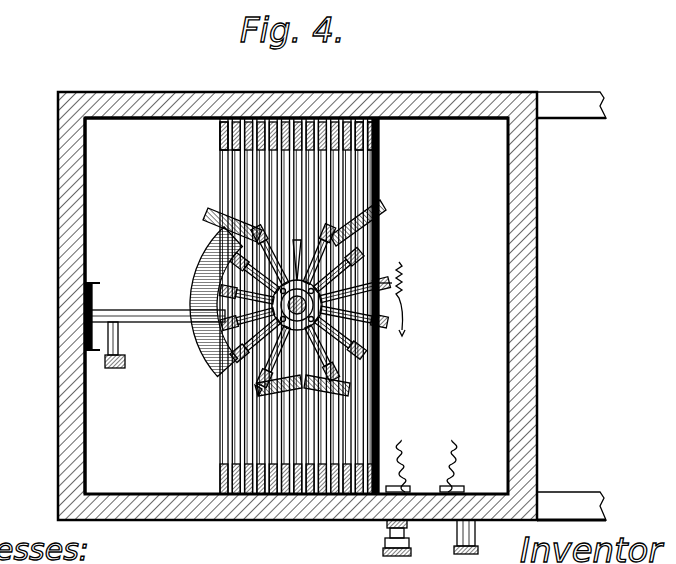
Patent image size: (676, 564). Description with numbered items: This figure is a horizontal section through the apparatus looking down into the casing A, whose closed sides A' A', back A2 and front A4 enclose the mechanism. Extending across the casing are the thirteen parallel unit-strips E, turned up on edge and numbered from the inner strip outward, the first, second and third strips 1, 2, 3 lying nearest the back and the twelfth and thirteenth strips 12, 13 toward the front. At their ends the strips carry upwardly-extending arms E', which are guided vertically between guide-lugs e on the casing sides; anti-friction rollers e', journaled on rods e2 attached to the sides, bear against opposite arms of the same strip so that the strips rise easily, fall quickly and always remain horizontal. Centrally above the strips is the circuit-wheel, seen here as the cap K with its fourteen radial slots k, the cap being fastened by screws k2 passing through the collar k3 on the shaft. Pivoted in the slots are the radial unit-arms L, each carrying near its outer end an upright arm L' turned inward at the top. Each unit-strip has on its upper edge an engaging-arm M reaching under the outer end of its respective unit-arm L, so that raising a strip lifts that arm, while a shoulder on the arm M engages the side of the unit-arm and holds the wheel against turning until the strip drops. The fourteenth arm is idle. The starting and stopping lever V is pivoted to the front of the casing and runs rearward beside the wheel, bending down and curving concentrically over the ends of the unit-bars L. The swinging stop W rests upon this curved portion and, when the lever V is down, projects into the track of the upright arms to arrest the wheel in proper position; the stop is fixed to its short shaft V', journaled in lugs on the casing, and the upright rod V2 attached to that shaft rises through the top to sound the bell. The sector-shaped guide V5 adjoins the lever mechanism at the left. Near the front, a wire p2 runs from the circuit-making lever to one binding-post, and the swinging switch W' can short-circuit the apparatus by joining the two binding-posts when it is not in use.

The casing A is at (274, 306).
The closed sides of casing A' is at (296, 305).
The back of casing A2 is at (86, 446).
The front of casing A4 is at (571, 306).
The guide-lugs e is at (324, 312).
The anti-friction rollers e' is at (248, 311).
The rods e2 is at (392, 92).
The unit-strips E is at (380, 306).
The upwardly-extending arms of unit-strips E' is at (299, 308).
The first unit-strip 1 is at (220, 132).
The second unit-strip 2 is at (222, 151).
The third unit-strip 3 is at (236, 152).
The twelfth unit-strip 12 is at (380, 133).
The thirteenth unit-strip 13 is at (376, 130).
The segmental guide plate V5 is at (222, 258).
The engaging-arm on unit-strip M is at (214, 212).
The cap K is at (366, 250).
The radial slots in cap k is at (235, 362).
The screws k2 is at (372, 260).
The collar k3 is at (252, 390).
The unit-arms L is at (391, 335).
The upright arms of unit-arms L' is at (292, 316).
The swinging stop W is at (155, 306).
The starting and stopping lever V is at (297, 323).
The short shaft or pivot-pin V' is at (123, 338).
The upright rod V2 is at (110, 369).
The wire p2 is at (446, 462).
The swinging switch W' is at (430, 538).